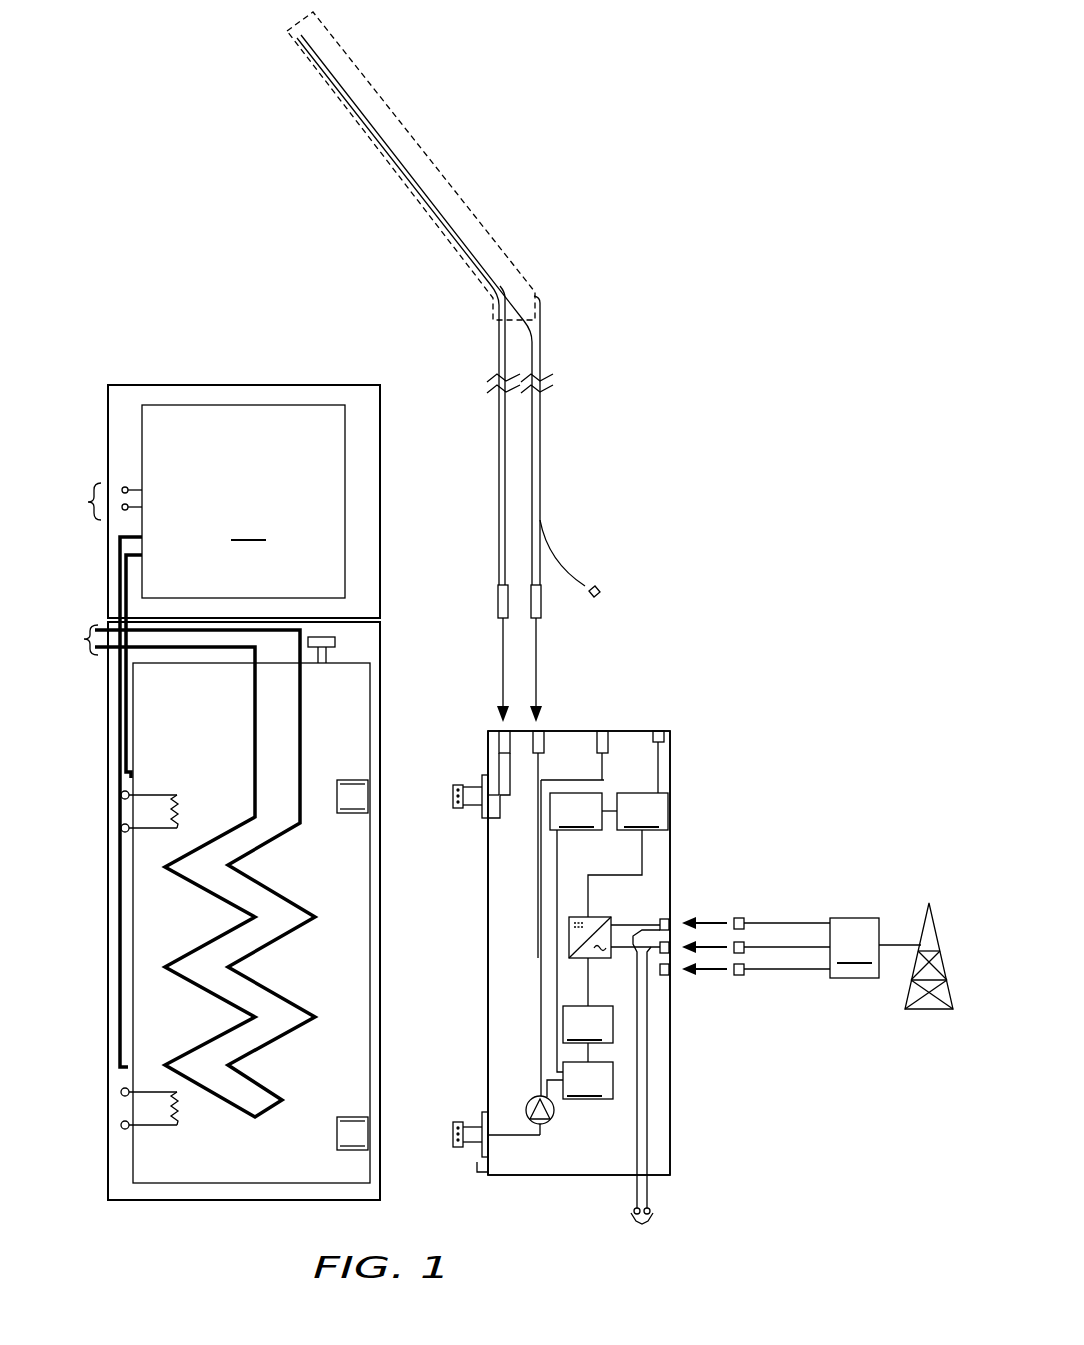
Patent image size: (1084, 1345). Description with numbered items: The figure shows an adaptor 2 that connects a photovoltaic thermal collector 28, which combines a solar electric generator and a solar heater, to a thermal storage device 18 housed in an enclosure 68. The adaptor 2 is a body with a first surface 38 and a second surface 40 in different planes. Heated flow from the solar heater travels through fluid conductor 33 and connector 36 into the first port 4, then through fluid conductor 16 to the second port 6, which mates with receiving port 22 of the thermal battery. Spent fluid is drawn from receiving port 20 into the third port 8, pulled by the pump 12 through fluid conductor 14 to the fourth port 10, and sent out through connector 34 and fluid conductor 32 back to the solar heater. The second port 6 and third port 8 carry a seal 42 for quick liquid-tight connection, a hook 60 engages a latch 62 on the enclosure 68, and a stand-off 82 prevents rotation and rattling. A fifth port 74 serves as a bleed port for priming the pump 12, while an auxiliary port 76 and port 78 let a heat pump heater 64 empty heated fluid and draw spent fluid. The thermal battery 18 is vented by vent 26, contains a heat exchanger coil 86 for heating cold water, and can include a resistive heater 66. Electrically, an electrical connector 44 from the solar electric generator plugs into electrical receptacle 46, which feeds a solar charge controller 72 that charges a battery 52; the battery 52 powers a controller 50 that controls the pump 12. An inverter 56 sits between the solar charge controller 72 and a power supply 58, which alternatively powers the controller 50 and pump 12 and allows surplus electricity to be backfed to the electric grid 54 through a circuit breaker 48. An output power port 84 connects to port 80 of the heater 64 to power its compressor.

The adaptor 2 is at (670, 1130).
The first port 4 is at (504, 731).
The second port 6 is at (453, 798).
The third port 8 is at (453, 1138).
The fourth port 10 is at (538, 731).
The pump 12 is at (554, 1110).
The fluid conductor 14 is at (538, 1005).
The fluid conductor 16 is at (500, 812).
The thermal storage device 18 is at (119, 950).
The receiving port 20 is at (348, 1117).
The receiving port 22 is at (350, 780).
The vent 26 is at (330, 637).
The photovoltaic thermal collector 28 is at (360, 56).
The fluid conductor 32 is at (540, 437).
The fluid conductor 33 is at (500, 437).
The connector 34 is at (542, 600).
The connector 36 is at (499, 601).
The first surface 38 is at (488, 965).
The second surface 40 is at (662, 731).
The seal 42 is at (458, 782).
The electrical connector 44 is at (602, 596).
The electrical receptacle 46 is at (656, 731).
The circuit breaker 48 is at (769, 938).
The controller 50 is at (588, 1080).
The battery 52 is at (583, 932).
The electric grid 54 is at (936, 1013).
The inverter 56 is at (603, 918).
The power supply 58 is at (588, 1034).
The hook 60 is at (486, 754).
The latch 62 is at (387, 758).
The heater 64 is at (243, 501).
The resistive heater 66 is at (145, 830).
The enclosure 68 is at (107, 681).
The solar charge controller 72 is at (628, 855).
The fifth port 74 is at (602, 731).
The auxiliary port 76 is at (120, 783).
The port 78 is at (121, 1075).
The port 80 is at (84, 517).
The stand-off 82 is at (480, 1175).
The output power port 84 is at (659, 1260).
The coil 86 is at (79, 655).